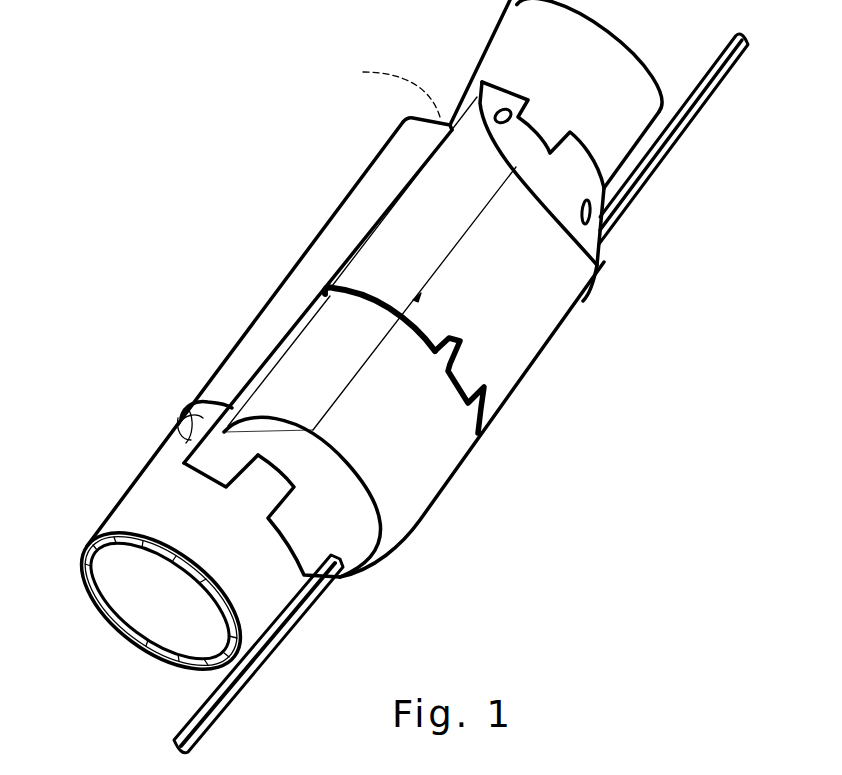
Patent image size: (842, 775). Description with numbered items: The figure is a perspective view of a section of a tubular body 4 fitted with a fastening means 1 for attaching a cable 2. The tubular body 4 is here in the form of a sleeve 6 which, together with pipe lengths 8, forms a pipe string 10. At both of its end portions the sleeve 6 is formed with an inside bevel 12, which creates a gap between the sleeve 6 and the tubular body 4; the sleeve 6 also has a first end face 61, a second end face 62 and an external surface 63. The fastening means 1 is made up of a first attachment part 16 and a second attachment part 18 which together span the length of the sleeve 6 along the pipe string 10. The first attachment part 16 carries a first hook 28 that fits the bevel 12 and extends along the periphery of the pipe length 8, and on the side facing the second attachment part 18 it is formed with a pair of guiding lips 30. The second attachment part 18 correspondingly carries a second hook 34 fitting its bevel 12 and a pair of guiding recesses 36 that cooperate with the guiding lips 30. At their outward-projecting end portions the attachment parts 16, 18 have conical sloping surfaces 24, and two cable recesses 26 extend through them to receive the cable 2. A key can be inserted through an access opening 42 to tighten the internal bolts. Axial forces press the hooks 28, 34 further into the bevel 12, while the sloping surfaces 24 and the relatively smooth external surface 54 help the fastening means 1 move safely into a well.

The fastening means 1 is at (490, 491).
The cable 2 is at (290, 621).
The tubular body 4 is at (255, 342).
The sleeve 6 is at (160, 601).
The pipe length 8 is at (497, 43).
The pipe string 10 is at (362, 146).
The inside bevel 12 is at (112, 432).
The first attachment part 16 is at (383, 440).
The second attachment part 18 is at (520, 267).
The conical sloping surface 24 is at (593, 238).
The cable recess 26 is at (287, 483).
The first hook 28 is at (201, 398).
The guiding lips 30 is at (478, 428).
The second hook 34 is at (450, 116).
The guiding recesses 36 is at (487, 390).
The access opening 42 is at (587, 212).
The external surface 54 is at (547, 317).
The first end face 61 is at (179, 425).
The second end face 62 is at (410, 119).
The external surface of the sleeve 63 is at (318, 262).